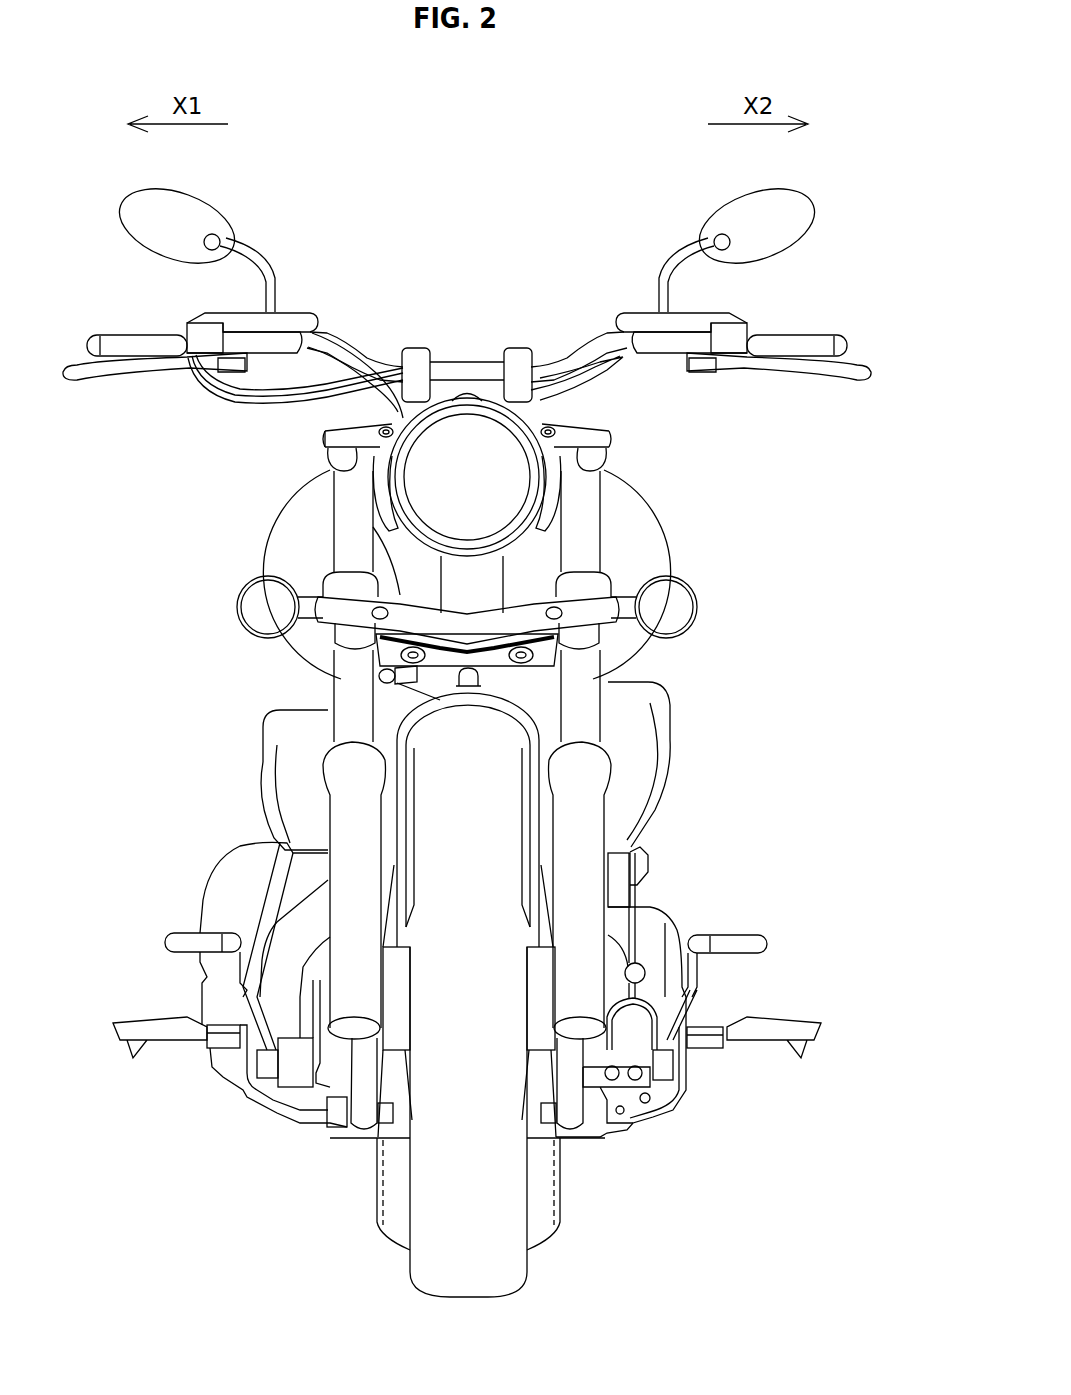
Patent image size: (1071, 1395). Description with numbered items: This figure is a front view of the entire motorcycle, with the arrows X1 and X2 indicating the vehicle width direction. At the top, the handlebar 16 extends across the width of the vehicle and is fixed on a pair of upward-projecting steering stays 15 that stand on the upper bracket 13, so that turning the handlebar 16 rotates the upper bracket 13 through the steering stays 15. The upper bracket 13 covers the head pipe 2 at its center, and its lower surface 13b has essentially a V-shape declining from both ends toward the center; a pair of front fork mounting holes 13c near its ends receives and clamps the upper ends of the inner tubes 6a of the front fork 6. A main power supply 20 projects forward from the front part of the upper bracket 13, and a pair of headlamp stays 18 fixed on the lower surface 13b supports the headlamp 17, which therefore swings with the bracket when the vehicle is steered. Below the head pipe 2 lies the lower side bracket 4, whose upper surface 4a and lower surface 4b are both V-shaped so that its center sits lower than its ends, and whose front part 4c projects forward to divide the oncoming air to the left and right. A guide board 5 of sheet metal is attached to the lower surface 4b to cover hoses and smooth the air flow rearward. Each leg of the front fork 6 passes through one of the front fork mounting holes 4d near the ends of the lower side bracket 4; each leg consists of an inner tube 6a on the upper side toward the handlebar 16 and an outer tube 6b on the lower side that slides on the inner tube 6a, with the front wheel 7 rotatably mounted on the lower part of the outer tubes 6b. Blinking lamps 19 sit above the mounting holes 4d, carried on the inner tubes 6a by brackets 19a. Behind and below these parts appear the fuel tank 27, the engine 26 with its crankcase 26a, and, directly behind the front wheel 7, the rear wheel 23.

The head pipe 2 is at (487, 580).
The lower side bracket 4 is at (597, 613).
The upper surface 4a is at (333, 578).
The lower surface 4b is at (378, 652).
The front part 4c is at (445, 627).
The front fork mounting holes 4d is at (340, 652).
The guide board 5 is at (497, 673).
The front fork 6 is at (355, 773).
The inner tube 6a is at (353, 715).
The outer tube 6b is at (355, 825).
The front wheel 7 is at (507, 1263).
The upper bracket 13 is at (590, 445).
The lower surface 13b is at (330, 450).
The front fork mounting holes 13c is at (343, 460).
The steering stays 15 is at (418, 354).
The handlebar 16 is at (560, 350).
The headlamp 17 is at (513, 497).
The headlamp stays 18 is at (340, 450).
The blinking lamps 19 is at (257, 607).
The brackets 19a is at (327, 587).
The main power supply 20 is at (466, 390).
The rear wheel 23 is at (533, 1187).
The engine 26 is at (694, 901).
The crankcase 26a is at (653, 965).
The fuel tank 27 is at (300, 503).